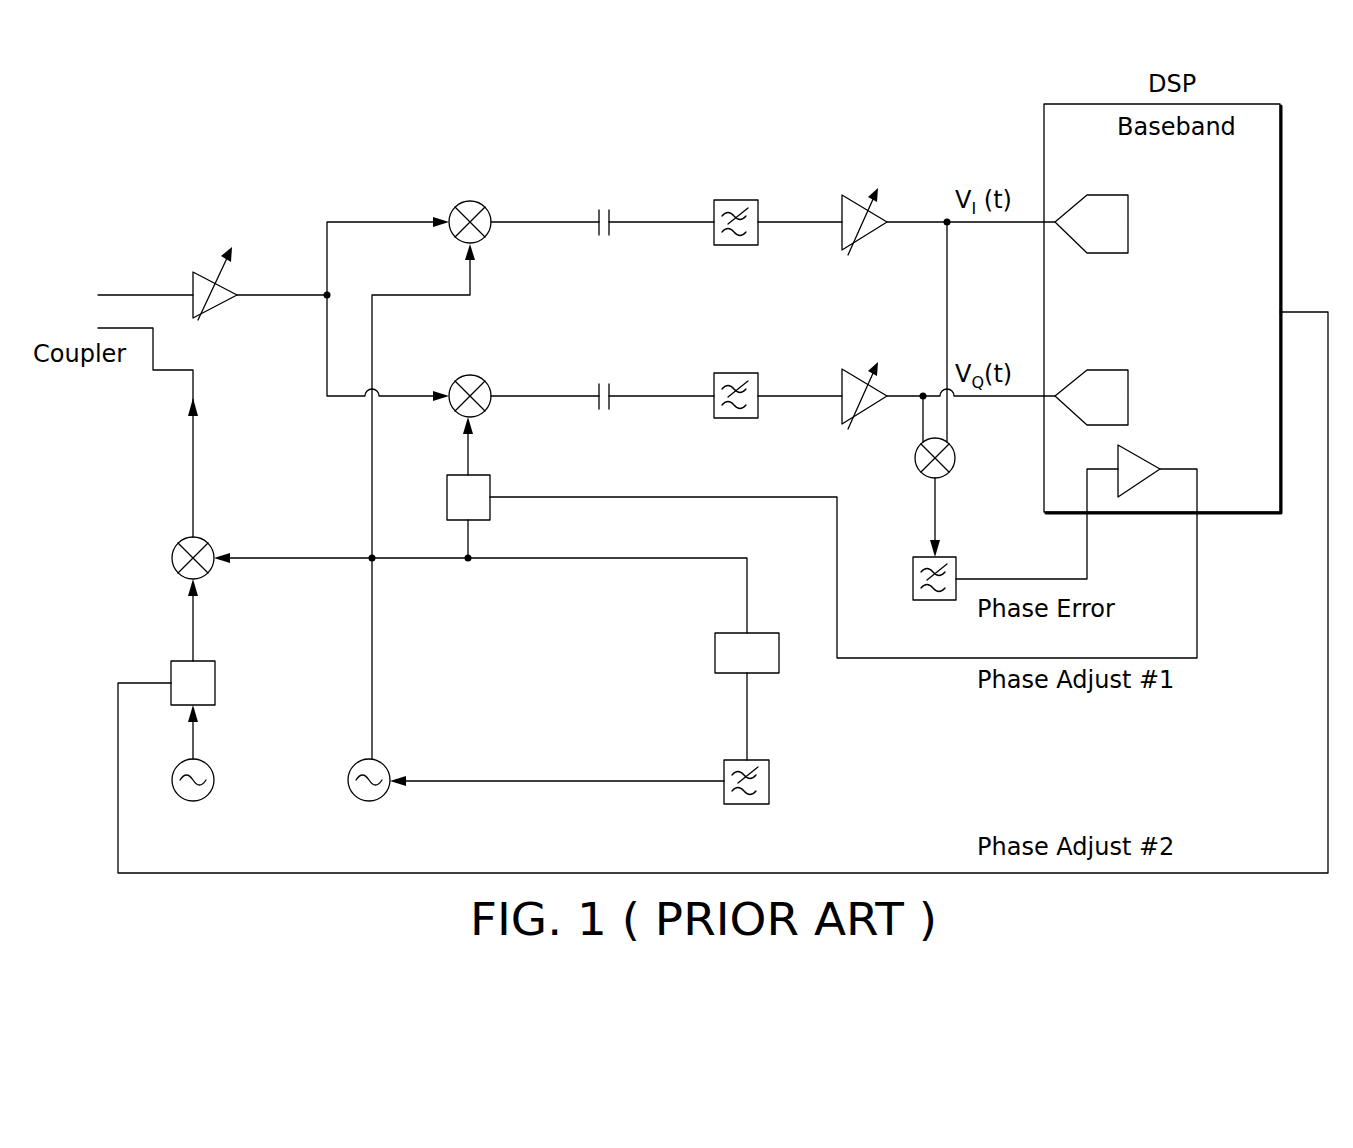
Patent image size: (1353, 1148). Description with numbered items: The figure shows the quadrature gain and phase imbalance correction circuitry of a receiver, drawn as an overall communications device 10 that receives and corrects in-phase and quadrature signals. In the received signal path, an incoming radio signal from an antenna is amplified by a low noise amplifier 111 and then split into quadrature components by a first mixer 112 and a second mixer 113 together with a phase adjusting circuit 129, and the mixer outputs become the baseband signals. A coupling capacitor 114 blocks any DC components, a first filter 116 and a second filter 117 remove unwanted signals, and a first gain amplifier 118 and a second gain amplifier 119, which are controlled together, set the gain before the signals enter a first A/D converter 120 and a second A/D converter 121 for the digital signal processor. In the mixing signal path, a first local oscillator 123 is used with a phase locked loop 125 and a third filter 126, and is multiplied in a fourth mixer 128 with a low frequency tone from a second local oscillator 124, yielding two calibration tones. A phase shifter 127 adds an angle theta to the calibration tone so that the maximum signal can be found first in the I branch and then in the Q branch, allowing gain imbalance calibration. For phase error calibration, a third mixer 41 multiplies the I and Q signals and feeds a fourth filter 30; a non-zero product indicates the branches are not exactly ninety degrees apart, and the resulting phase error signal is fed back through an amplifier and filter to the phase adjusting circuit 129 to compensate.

The communications device 10 is at (198, 136).
The low noise amplifier 111 is at (193, 270).
The mixer M1 112 is at (460, 202).
The mixer M2 113 is at (460, 377).
The coupling capacitor C1 114 is at (600, 210).
The filter F1 116 is at (718, 200).
The filter F2 117 is at (718, 373).
The gain amplifier G1 118 is at (845, 195).
The gain amplifier G2 119 is at (845, 369).
The A/D converter 120 is at (1107, 195).
The A/D converter 121 is at (1107, 370).
The local oscillator L1 123 is at (388, 765).
The local oscillator L2 124 is at (212, 763).
The phase locked loop 125 is at (720, 633).
The filter F3 126 is at (732, 760).
The phase shifter P2 127 is at (208, 661).
The mixer M4 128 is at (208, 541).
The phase adjusting circuit P1 129 is at (449, 476).
The filter F4 30 is at (918, 557).
The mixer M3 41 is at (913, 458).